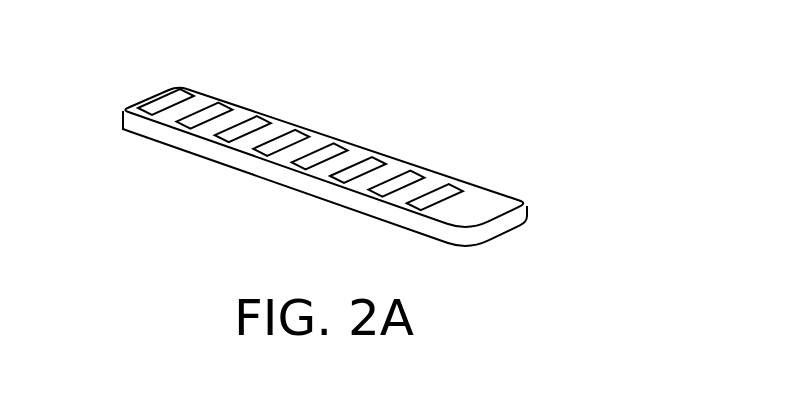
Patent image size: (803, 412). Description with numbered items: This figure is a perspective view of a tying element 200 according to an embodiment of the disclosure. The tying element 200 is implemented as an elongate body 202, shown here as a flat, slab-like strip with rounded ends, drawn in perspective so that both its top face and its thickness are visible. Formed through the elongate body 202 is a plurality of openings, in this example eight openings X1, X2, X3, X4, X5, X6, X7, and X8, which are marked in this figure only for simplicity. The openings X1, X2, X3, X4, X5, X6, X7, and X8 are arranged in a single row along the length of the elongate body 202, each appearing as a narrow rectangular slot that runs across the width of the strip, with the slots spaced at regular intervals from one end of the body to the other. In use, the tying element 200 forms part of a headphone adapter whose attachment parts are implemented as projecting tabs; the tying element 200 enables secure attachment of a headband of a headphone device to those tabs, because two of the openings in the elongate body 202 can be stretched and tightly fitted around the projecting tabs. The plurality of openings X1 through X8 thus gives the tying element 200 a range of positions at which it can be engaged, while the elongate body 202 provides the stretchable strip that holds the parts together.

The tying element 200 is at (359, 134).
The elongate body 202 is at (369, 167).
The opening X1 is at (214, 84).
The opening X2 is at (154, 143).
The opening X3 is at (288, 111).
The opening X4 is at (224, 169).
The opening X5 is at (364, 136).
The opening X6 is at (299, 197).
The opening X7 is at (441, 163).
The opening X8 is at (377, 224).